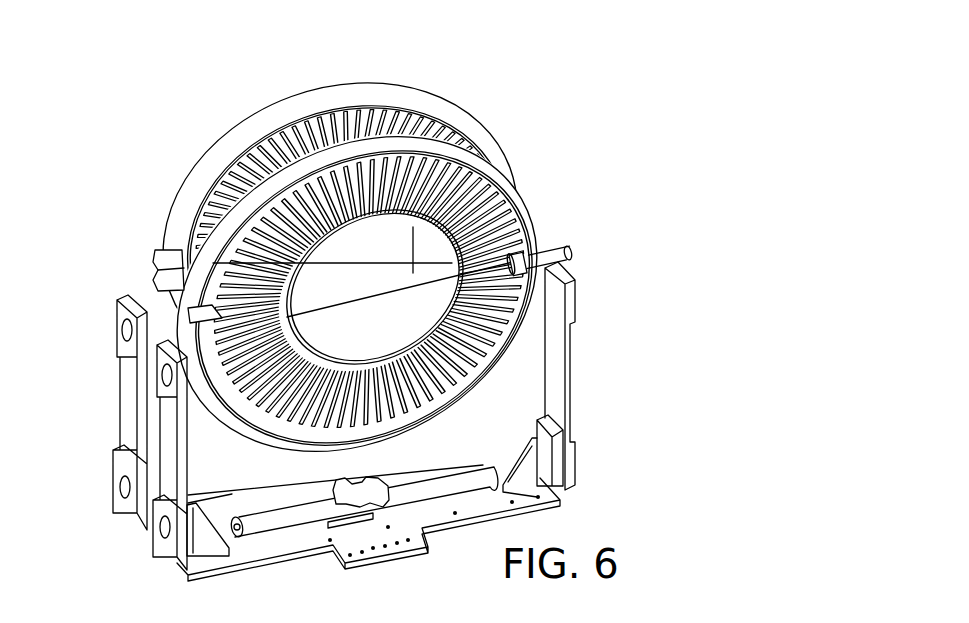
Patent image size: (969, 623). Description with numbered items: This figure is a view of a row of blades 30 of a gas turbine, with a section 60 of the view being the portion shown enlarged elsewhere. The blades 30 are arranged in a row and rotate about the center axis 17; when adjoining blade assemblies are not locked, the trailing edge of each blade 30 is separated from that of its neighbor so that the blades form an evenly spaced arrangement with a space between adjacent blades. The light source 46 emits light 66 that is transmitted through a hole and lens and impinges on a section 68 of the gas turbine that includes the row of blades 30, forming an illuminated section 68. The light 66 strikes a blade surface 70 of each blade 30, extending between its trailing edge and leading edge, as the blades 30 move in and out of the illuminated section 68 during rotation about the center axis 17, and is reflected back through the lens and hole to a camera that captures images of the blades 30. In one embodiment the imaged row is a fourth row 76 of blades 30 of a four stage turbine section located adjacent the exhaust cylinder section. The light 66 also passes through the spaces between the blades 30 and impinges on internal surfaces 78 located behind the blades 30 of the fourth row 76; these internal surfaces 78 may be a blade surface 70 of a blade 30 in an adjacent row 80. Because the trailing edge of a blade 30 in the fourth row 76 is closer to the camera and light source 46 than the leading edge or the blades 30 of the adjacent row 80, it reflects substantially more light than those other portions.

The center axis 17 is at (352, 385).
The blade 30 is at (318, 126).
The light source 46 is at (567, 247).
The section 60 is at (208, 268).
The light 66 is at (483, 180).
The illuminated section 68 is at (222, 247).
The blade surface 70 is at (228, 186).
The fourth row 76 is at (523, 205).
The internal surfaces 78 is at (263, 157).
The row 80 is at (422, 112).